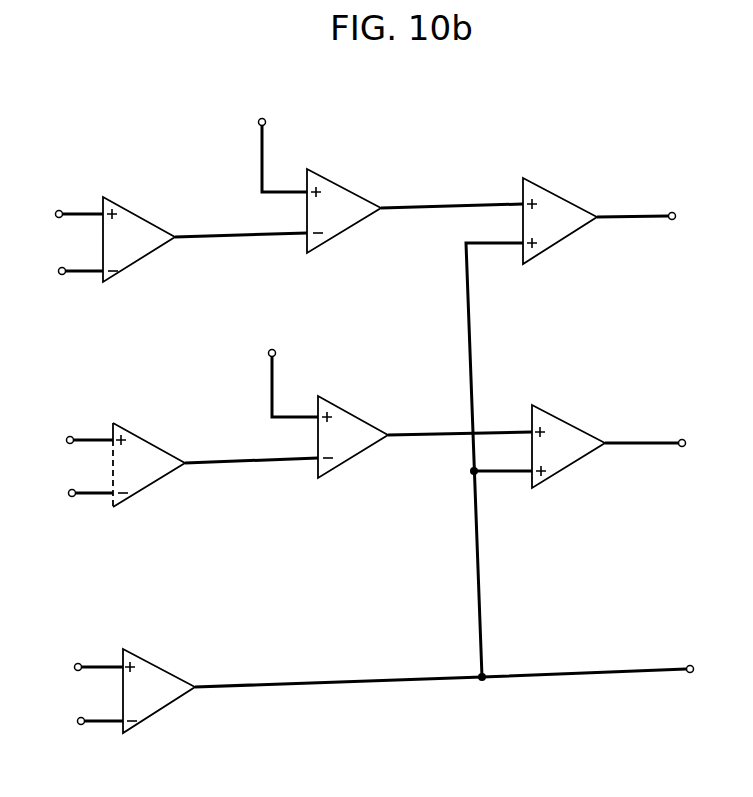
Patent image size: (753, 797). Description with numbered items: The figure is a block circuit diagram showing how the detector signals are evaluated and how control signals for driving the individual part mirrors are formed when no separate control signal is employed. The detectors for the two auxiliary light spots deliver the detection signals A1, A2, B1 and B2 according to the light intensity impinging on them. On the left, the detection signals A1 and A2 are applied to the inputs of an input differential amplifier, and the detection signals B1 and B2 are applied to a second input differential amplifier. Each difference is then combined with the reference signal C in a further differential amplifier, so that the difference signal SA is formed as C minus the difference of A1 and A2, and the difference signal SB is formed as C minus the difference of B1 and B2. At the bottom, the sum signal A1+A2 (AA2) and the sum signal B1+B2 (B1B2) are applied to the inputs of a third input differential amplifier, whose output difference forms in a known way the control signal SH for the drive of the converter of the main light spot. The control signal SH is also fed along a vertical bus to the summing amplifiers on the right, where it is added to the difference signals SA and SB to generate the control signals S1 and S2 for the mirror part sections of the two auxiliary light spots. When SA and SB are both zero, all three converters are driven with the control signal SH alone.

The detection signal A1 is at (69, 218).
The detection signal A2 is at (69, 275).
The reference signal C is at (287, 254).
The difference signal SA is at (452, 190).
The control signal S1 is at (686, 216).
The detection signal B1 is at (78, 442).
The detection signal B2 is at (79, 495).
The difference signal SB is at (460, 418).
The control signal S2 is at (696, 442).
The sum signal A1+A2 AA2 is at (72, 668).
The sum signal B1+B2 B1B2 is at (73, 722).
The control signal SH is at (704, 665).